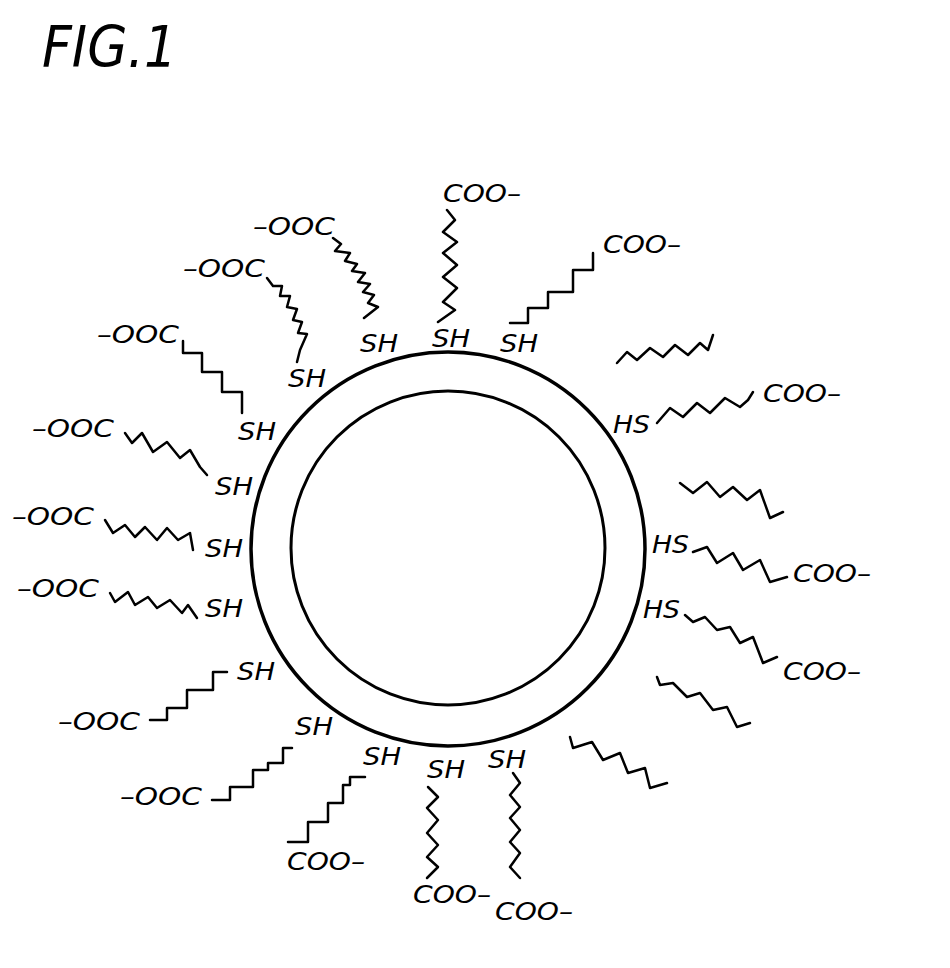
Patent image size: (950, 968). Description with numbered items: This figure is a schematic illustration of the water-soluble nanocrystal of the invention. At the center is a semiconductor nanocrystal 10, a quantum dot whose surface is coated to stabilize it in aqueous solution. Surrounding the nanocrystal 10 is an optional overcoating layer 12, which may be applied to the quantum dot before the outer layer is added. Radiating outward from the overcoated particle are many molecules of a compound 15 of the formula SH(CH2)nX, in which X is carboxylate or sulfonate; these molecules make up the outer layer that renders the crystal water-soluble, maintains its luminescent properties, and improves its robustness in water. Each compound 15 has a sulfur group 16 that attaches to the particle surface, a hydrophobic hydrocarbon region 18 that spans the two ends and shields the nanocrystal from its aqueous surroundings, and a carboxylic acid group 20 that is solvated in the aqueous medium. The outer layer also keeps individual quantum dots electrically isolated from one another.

The semiconductor nanocrystal 10 is at (412, 615).
The overcoating layer 12 is at (367, 717).
The compound 15 is at (713, 319).
The thiol (HS) group 16 is at (673, 467).
The alkyl chain ligand 18 is at (623, 772).
The carboxylate (COO-) group 20 is at (787, 737).